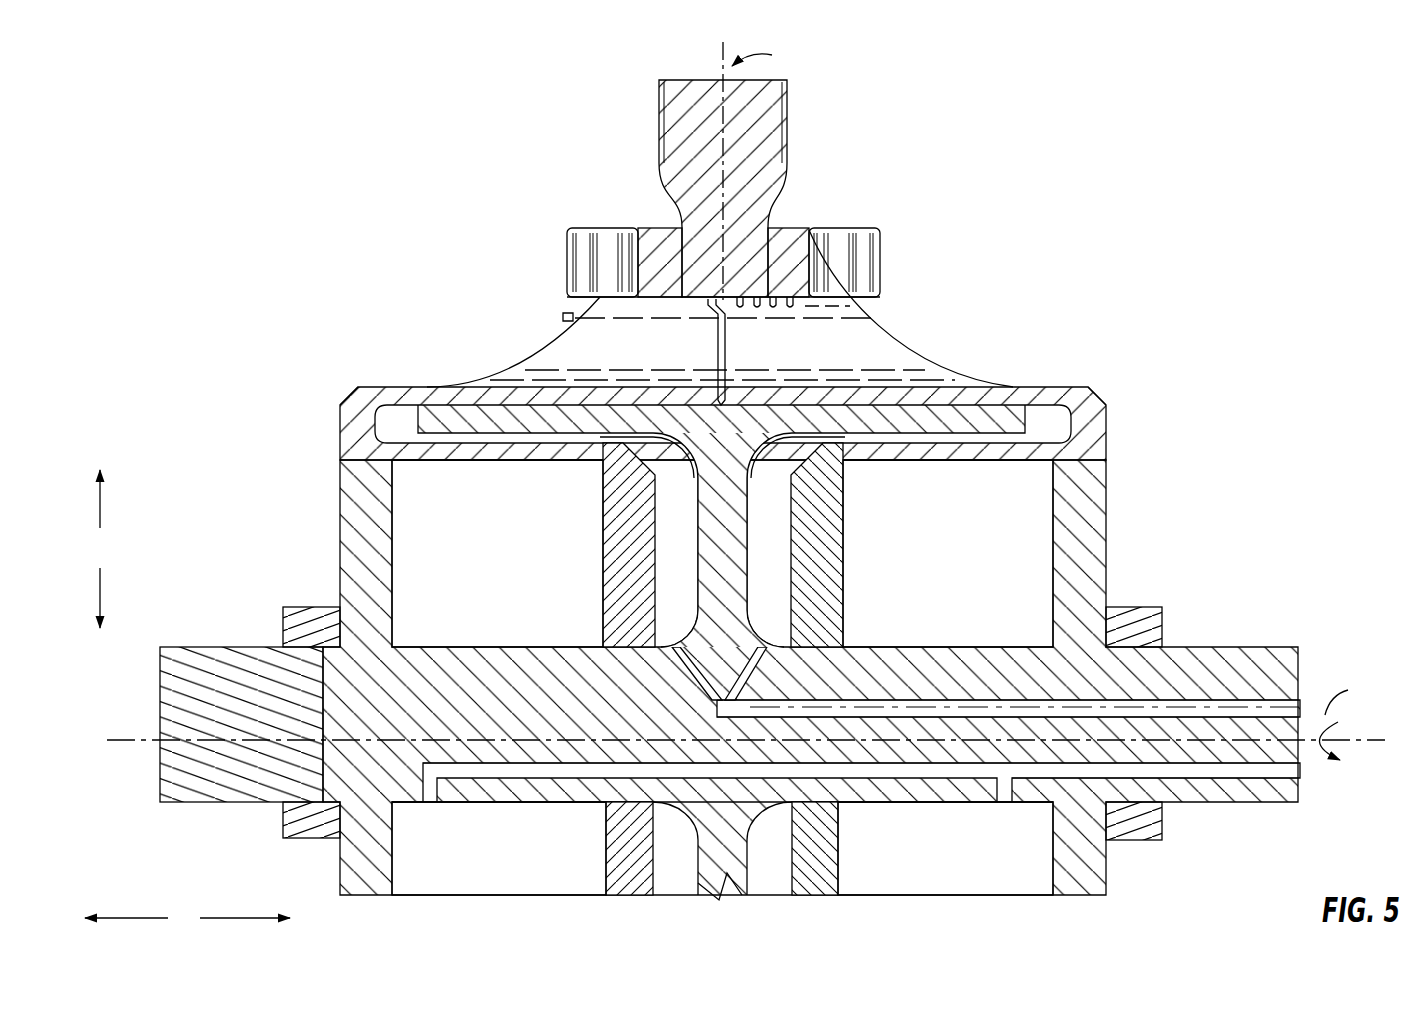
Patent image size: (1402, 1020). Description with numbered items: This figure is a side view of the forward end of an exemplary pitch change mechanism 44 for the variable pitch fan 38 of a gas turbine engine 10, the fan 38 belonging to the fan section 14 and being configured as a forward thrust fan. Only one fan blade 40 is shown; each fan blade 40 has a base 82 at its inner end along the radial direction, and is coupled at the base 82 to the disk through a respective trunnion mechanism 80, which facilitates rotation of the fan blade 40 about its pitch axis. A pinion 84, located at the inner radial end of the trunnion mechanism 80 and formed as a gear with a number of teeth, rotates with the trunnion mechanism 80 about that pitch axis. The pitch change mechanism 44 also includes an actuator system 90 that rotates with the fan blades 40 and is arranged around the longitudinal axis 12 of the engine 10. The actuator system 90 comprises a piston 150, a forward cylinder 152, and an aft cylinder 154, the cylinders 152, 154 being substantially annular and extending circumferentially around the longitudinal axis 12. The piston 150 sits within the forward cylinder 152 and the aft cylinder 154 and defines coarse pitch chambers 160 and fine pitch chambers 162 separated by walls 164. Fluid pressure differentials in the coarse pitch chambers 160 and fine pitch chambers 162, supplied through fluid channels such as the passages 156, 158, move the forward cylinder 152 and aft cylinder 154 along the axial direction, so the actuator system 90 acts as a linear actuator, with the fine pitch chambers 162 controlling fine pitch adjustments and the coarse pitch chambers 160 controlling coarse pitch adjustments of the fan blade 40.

The gas turbine engine 10 is at (1068, 100).
The longitudinal axis 12 is at (128, 742).
The fan section 14 is at (500, 110).
The fan 38 is at (467, 197).
The fan blade 40 is at (795, 104).
The pitch change mechanism 44 is at (1050, 265).
The trunnion mechanism 80 is at (815, 183).
The base 82 is at (700, 235).
The pinion 84 is at (793, 232).
The actuator system 90 is at (1208, 458).
The piston 150 is at (1255, 640).
The forward cylinder 152 is at (346, 390).
The aft cylinder 154 is at (1100, 390).
The radial passage 156 is at (1175, 700).
The lower passage 158 is at (1275, 772).
The coarse pitch chamber 160 is at (662, 458).
The fine pitch chamber 162 is at (415, 520).
The wall 164 is at (612, 523).